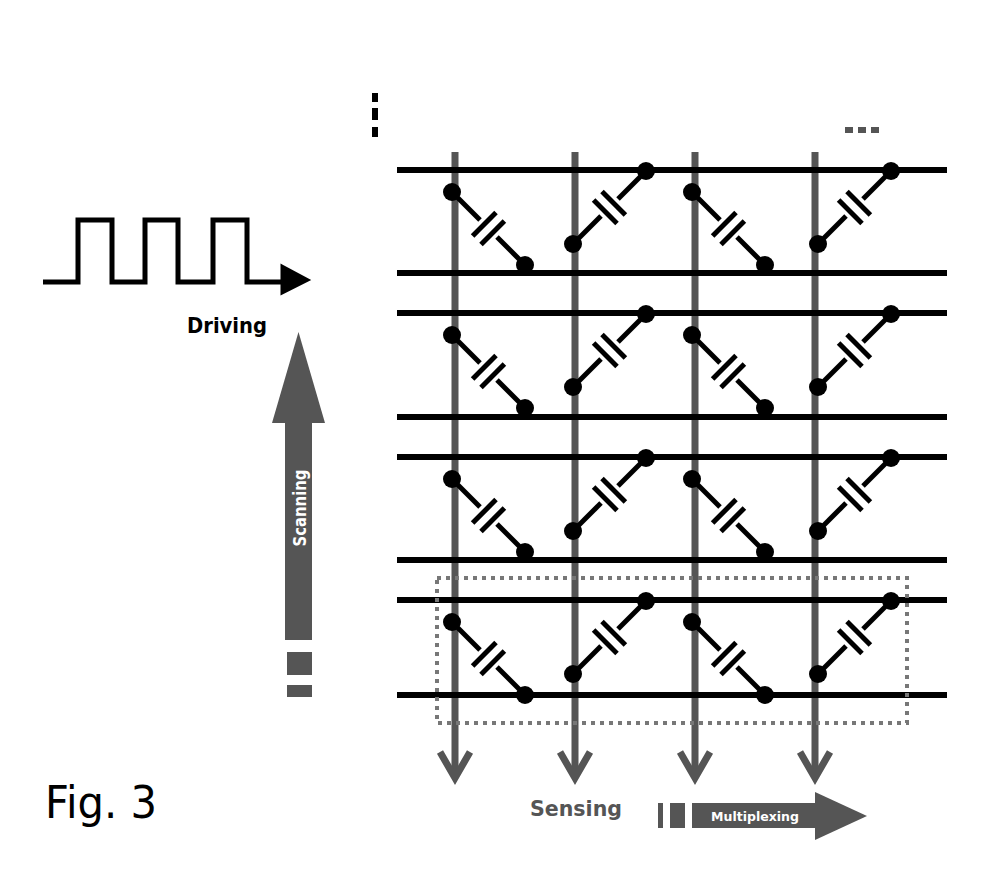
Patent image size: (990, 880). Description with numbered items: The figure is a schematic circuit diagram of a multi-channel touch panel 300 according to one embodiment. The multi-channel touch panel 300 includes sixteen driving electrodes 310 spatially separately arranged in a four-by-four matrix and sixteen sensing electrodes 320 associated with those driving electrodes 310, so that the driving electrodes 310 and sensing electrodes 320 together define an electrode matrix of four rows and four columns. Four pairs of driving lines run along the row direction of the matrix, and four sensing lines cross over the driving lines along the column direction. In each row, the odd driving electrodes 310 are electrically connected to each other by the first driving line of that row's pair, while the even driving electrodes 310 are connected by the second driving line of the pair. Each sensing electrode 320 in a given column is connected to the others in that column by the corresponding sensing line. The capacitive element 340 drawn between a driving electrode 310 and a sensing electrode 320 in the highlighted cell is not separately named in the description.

The multi-channel touch panel 300 is at (680, 57).
The driving electrode 310 is at (527, 704).
The sensing electrode 320 is at (443, 622).
The sensing capacitor 340 is at (472, 673).